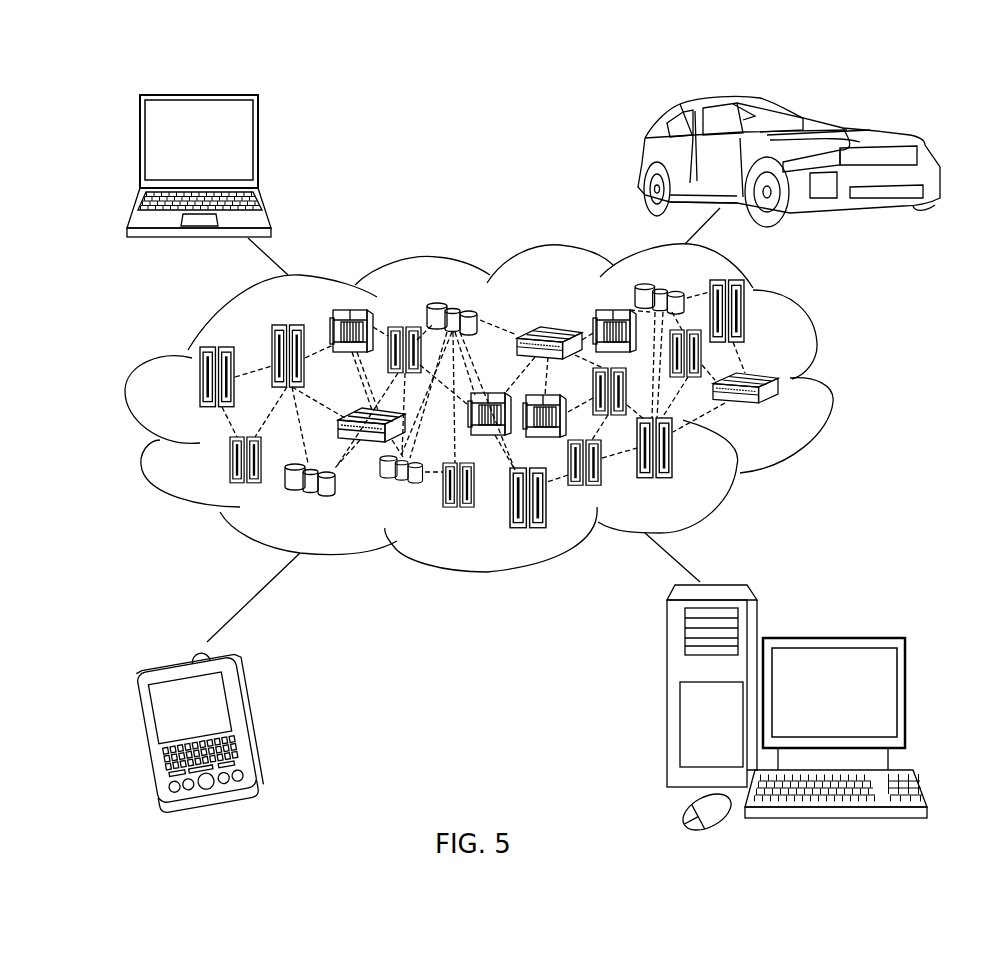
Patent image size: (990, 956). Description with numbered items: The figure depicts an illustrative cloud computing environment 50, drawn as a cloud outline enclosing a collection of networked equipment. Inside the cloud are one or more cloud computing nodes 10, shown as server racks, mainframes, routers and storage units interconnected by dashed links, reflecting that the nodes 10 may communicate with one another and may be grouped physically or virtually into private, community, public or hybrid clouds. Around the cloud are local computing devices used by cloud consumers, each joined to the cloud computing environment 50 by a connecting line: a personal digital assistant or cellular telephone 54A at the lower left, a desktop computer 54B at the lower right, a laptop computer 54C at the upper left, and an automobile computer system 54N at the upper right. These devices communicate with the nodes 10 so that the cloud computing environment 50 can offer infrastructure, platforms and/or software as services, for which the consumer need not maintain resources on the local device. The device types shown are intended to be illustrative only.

The cloud computing node 10 is at (790, 414).
The cloud computing environment 50 is at (833, 392).
The personal digital assistant or cellular telephone 54A is at (248, 720).
The desktop computer 54B is at (832, 637).
The laptop computer 54C is at (258, 148).
The automobile computer system 54N is at (644, 160).